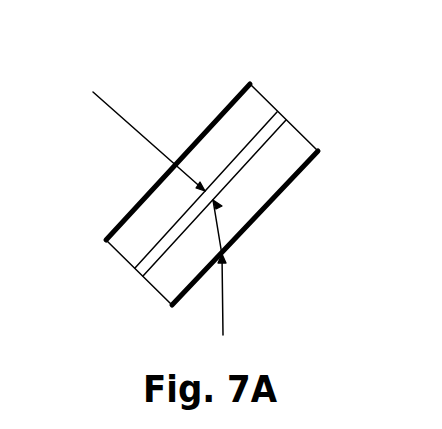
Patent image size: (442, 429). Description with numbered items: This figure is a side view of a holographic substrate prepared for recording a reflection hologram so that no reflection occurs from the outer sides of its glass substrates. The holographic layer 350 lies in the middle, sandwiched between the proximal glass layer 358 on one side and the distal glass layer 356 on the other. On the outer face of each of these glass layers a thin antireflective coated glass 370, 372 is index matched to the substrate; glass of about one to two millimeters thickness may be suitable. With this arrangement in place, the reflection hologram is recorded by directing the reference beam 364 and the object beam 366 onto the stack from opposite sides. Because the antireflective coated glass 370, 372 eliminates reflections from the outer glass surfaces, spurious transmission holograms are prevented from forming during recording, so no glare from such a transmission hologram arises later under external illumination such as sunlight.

The holographic layer 350 is at (134, 271).
The distal glass layer 356 is at (146, 239).
The proximal glass layer 358 is at (180, 264).
The reference beam 364 is at (100, 101).
The object beam 366 is at (224, 307).
The antireflective coated glass 370 is at (250, 84).
The antireflective coated glass 372 is at (320, 152).